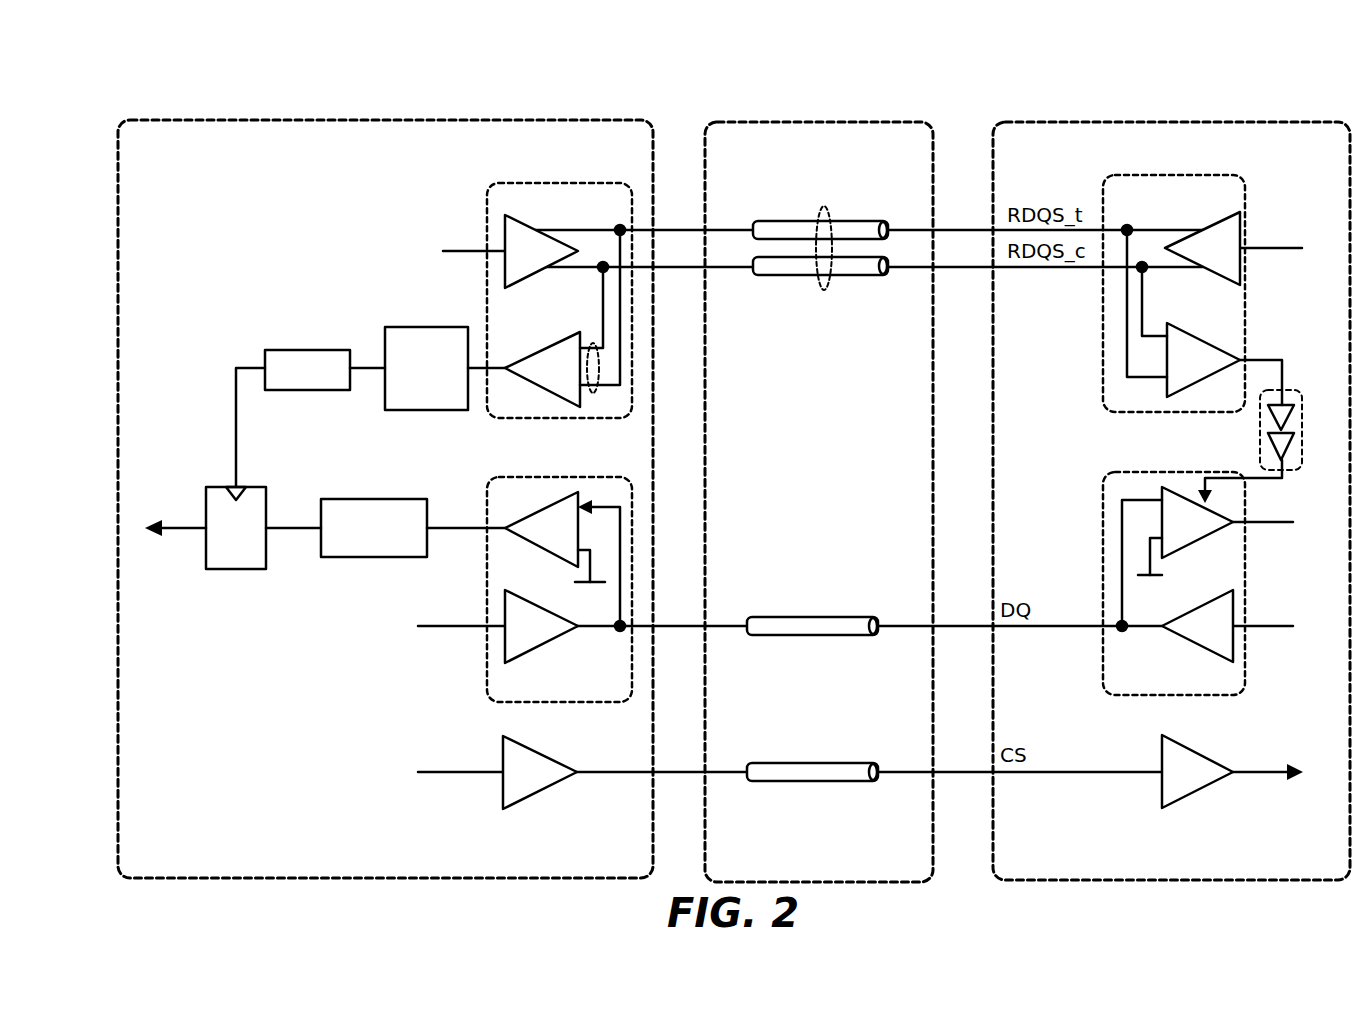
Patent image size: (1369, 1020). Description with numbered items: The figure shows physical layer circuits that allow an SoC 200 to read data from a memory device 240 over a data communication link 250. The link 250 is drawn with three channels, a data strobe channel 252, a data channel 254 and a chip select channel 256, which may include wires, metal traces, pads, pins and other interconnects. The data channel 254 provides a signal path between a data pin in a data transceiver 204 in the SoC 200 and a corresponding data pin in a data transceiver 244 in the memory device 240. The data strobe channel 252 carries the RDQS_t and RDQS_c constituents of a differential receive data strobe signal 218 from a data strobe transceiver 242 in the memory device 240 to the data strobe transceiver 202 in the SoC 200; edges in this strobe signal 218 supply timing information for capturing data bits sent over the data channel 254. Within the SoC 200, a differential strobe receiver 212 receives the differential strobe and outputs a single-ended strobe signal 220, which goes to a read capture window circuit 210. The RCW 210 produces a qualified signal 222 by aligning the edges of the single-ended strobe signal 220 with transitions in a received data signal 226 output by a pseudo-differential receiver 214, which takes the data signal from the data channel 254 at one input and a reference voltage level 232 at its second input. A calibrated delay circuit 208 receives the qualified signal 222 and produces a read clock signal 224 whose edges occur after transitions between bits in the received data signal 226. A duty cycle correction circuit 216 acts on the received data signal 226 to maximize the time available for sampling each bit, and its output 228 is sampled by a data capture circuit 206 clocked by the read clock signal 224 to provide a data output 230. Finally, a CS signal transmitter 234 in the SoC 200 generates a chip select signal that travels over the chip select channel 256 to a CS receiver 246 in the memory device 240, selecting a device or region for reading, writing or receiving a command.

The SoC 200 is at (117, 49).
The data strobe transceiver 202 is at (540, 183).
The data transceiver 204 is at (540, 477).
The data capture circuit 206 is at (215, 487).
The calibrated delay circuit 208 is at (280, 350).
The read capture window circuit 210 is at (400, 327).
The differential strobe receiver 212 is at (575, 335).
The pseudo-differential receiver 214 is at (572, 497).
The duty cycle correction circuit 216 is at (355, 499).
The differential receive data strobe signal 218 is at (590, 393).
The single-ended strobe signal 220 is at (488, 372).
The qualified signal 222 is at (368, 372).
The read clock signal 224 is at (238, 457).
The received data signal 226 is at (460, 531).
The output of the DCC 228 is at (290, 531).
The data output 230 is at (185, 531).
The reference voltage level 232 is at (585, 582).
The CS signal transmitter 234 is at (503, 752).
The memory device 240 is at (1002, 49).
The data strobe transceiver 242 is at (1120, 412).
The data transceiver 244 is at (1120, 472).
The CS receiver 246 is at (1162, 750).
The data communication link 250 is at (715, 49).
The data strobe channel 252 is at (822, 285).
The data channel 254 is at (790, 617).
The chip select channel 256 is at (790, 763).